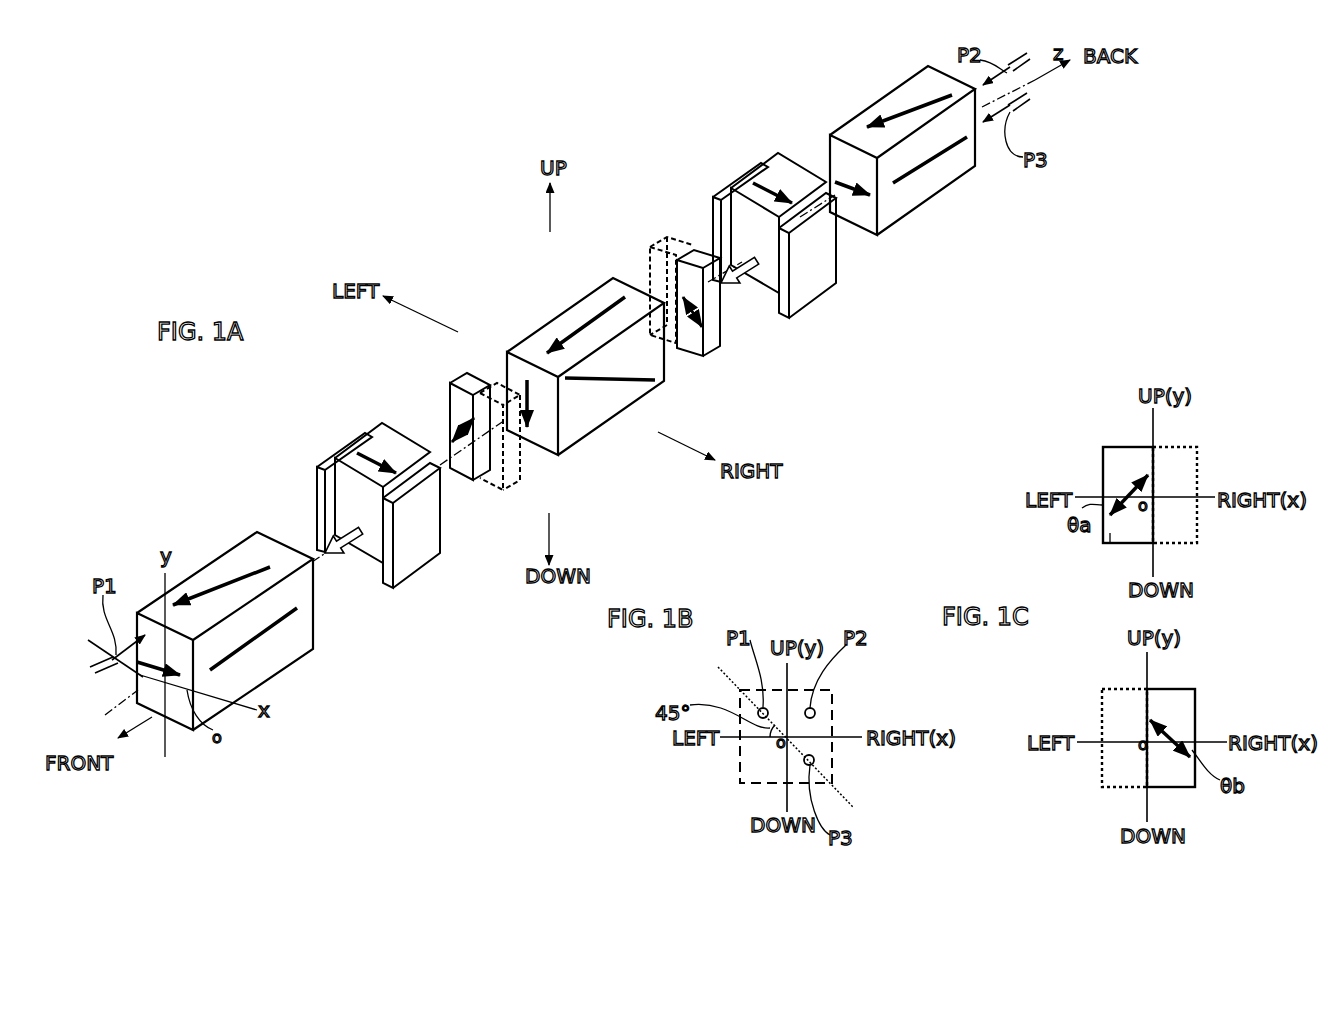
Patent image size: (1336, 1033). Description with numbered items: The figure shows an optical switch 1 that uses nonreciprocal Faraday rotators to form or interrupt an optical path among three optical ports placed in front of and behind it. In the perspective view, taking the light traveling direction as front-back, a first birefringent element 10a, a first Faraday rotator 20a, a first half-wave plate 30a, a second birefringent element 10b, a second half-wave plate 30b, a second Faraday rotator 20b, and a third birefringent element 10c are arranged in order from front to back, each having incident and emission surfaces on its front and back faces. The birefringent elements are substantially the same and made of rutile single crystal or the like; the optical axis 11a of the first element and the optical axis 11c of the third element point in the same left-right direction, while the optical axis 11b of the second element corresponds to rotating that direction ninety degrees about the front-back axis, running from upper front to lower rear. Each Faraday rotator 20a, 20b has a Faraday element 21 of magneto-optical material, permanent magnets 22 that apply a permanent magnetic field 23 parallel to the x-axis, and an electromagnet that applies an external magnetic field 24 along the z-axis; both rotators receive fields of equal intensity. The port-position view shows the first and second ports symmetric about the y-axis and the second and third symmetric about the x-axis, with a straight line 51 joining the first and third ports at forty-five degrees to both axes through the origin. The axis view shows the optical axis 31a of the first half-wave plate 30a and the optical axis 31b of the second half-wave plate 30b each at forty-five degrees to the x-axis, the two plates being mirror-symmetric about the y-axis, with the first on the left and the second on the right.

In FIG. 1A, the optical switch 1 is at (425, 238).
In FIG. 1A, the first birefringent element 10a is at (222, 562).
In FIG. 1A, the second birefringent element 10b is at (543, 320).
In FIG. 1A, the third birefringent element 10c is at (888, 107).
In FIG. 1A, the optical axis of first birefringent element 11a is at (262, 570).
In FIG. 1A, the optical axis of second birefringent element 11b is at (595, 310).
In FIG. 1A, the optical axis of third birefringent element 11c is at (922, 98).
In FIG. 1A, the first Faraday rotator 20a is at (335, 430).
In FIG. 1A, the second Faraday rotator 20b is at (725, 172).
In FIG. 1A, the Faraday element 21 is at (358, 560).
In FIG. 1A, the permanent magnets 22 is at (312, 493).
In FIG. 1A, the permanent magnetic field 23 is at (372, 453).
In FIG. 1A, the external magnetic field 24 is at (340, 533).
In FIG. 1A, the first half-wave plate 30a is at (498, 395).
In FIG. 1C, the first half-wave plate 30a is at (1112, 543).
In FIG. 1A, the second half-wave plate 30b is at (715, 350).
In FIG. 1C, the second half-wave plate 30b is at (1188, 702).
In FIG. 1A, the optical axis of first half-wave plate 31a is at (449, 455).
In FIG. 1C, the optical axis of first half-wave plate 31a is at (1135, 477).
In FIG. 1A, the optical axis of second half-wave plate 31b is at (689, 354).
In FIG. 1C, the optical axis of second half-wave plate 31b is at (1157, 717).
In FIG. 1B, the straight line 51 is at (733, 690).